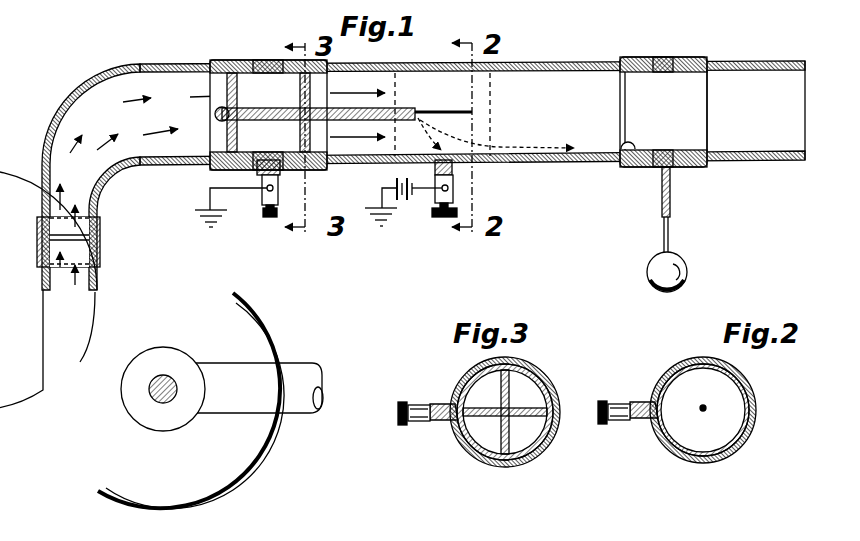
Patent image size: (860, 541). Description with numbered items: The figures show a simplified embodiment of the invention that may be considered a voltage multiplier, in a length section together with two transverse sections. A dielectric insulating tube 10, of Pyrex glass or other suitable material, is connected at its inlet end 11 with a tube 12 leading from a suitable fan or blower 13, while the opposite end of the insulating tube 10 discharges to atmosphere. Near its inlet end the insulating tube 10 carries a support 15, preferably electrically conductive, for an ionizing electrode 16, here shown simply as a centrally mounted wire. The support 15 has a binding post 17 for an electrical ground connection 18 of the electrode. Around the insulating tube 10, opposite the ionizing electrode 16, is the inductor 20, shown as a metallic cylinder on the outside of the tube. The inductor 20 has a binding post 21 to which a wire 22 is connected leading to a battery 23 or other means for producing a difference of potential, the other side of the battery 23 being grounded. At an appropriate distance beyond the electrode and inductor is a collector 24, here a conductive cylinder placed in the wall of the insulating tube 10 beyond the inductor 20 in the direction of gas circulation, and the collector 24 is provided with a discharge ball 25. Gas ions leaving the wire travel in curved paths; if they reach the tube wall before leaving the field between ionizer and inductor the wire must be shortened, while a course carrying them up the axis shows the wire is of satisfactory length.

In FIG. 1, the dielectric insulating tube 10 is at (548, 58).
In FIG. 3, the dielectric insulating tube 10 is at (530, 370).
In FIG. 2, the dielectric insulating tube 10 is at (753, 401).
In FIG. 1, the inlet end 11 is at (96, 211).
In FIG. 1, the tube 12 is at (95, 273).
In FIG. 1, the fan or blower 13 is at (236, 292).
In FIG. 1, the support 15 is at (250, 57).
In FIG. 3, the support 15 is at (474, 455).
In FIG. 1, the ionizing electrode 16 is at (473, 111).
In FIG. 2, the ionizing electrode 16 is at (706, 407).
In FIG. 1, the binding post 17 is at (260, 203).
In FIG. 3, the binding post 17 is at (442, 400).
In FIG. 1, the electrical ground connection 18 is at (210, 200).
In FIG. 1, the inductor 20 is at (485, 166).
In FIG. 2, the inductor 20 is at (747, 428).
In FIG. 1, the binding post 21 is at (435, 198).
In FIG. 2, the binding post 21 is at (645, 421).
In FIG. 1, the wire 22 is at (420, 196).
In FIG. 1, the battery 23 is at (393, 181).
In FIG. 1, the collector 24 is at (618, 160).
In FIG. 1, the discharge ball 25 is at (688, 264).